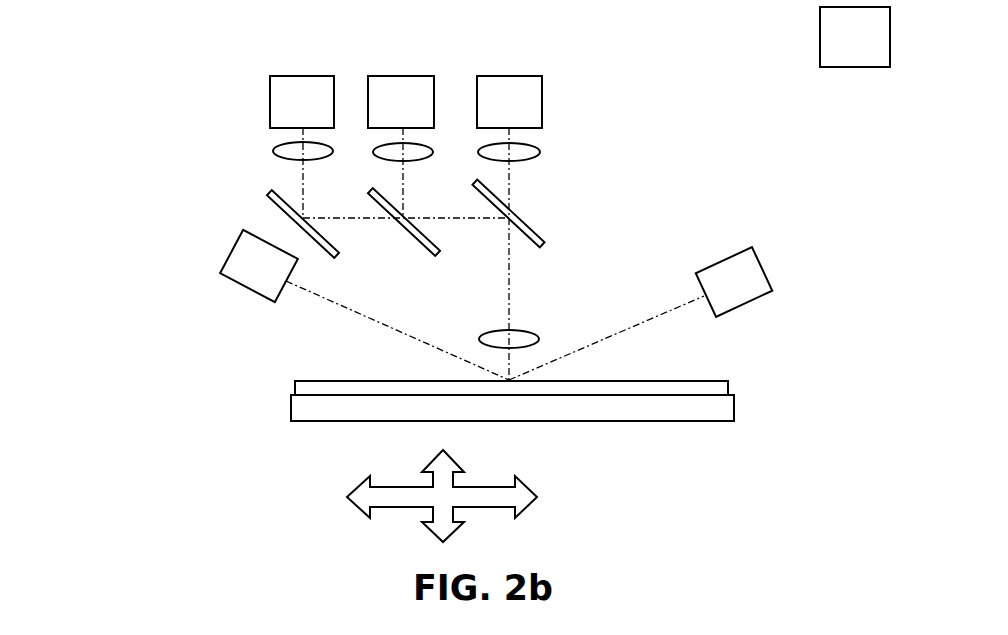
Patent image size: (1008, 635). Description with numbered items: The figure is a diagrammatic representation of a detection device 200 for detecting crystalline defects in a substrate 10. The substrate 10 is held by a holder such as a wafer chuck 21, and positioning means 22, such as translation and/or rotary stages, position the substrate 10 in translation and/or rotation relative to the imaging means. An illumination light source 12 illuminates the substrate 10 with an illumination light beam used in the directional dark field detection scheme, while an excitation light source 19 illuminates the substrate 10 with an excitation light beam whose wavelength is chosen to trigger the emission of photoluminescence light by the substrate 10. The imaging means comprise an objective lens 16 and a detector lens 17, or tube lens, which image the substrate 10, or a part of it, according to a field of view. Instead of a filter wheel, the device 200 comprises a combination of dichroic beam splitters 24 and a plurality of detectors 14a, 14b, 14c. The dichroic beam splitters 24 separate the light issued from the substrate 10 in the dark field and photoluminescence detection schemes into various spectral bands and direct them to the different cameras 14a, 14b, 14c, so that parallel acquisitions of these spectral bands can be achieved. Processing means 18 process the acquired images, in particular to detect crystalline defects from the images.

The detection device 200 is at (80, 99).
The detector 14a is at (303, 75).
The detector 14b is at (403, 75).
The detector 14c is at (542, 103).
The detector lens 17 is at (273, 151).
The dichroic beam splitter 24 is at (336, 243).
The illumination light source 12 is at (229, 250).
The excitation light source 19 is at (763, 268).
The objective lens 16 is at (538, 336).
The processing means 18 is at (818, 33).
The substrate 10 is at (295, 392).
The wafer chuck 21 is at (512, 421).
The positioning means 22 is at (346, 496).